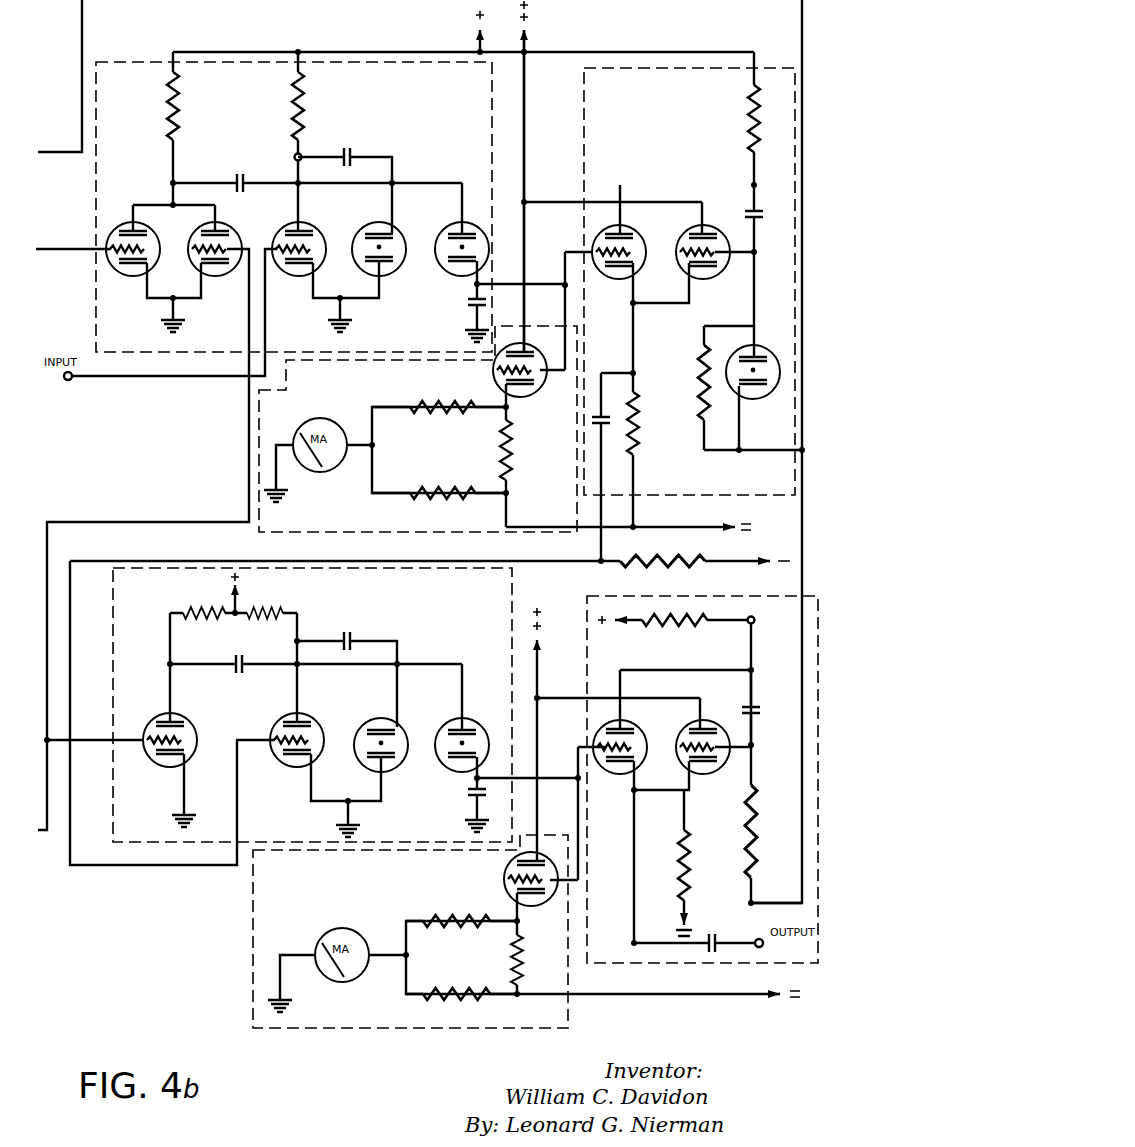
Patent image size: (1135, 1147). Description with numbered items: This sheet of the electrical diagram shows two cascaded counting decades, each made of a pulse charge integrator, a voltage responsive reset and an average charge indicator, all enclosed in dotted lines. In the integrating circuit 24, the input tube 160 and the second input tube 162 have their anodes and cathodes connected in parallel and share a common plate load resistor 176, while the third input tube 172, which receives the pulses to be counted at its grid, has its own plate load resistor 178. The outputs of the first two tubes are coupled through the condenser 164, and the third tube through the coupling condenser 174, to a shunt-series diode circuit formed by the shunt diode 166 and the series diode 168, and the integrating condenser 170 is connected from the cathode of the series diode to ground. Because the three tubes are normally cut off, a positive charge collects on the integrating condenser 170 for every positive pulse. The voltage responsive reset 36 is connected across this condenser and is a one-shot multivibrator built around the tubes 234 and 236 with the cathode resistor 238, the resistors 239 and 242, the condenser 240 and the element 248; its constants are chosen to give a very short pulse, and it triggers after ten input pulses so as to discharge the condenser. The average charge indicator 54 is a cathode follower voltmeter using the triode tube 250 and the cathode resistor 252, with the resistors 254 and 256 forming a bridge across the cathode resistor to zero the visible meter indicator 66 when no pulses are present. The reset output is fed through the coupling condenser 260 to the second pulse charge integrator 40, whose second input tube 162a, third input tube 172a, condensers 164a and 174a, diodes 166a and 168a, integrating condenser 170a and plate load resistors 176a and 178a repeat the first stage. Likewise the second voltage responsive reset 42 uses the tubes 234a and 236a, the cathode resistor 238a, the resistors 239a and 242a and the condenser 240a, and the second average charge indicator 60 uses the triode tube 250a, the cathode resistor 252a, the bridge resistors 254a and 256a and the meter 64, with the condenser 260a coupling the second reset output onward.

The integrating circuit 24 is at (112, 66).
The voltage responsive reset 36 is at (762, 68).
The second pulse charge integrator 40 is at (162, 568).
The second voltage responsive reset 42 is at (587, 612).
The average charge indicator 54 is at (320, 532).
The second average charge indicator 60 is at (308, 1028).
The meter 64 is at (344, 926).
The visible meter indicator 66 is at (326, 420).
The input tube 160 is at (236, 224).
The second input tube 162 is at (112, 214).
The condenser 164 is at (240, 178).
The shunt diode 166 is at (398, 228).
The series diode 168 is at (466, 192).
The integrating condenser 170 is at (468, 303).
The third input tube 172 is at (320, 226).
The coupling condenser 174 is at (350, 152).
The common plate load resistor 176 is at (179, 108).
The plate load resistor 178 is at (304, 100).
The tube 234 is at (636, 236).
The tube 236 is at (716, 220).
The cathode resistor 238 is at (638, 426).
The resistor 239 is at (750, 122).
The condenser 240 is at (764, 212).
The resistor 242 is at (700, 360).
The reset circuit element 248 is at (762, 340).
The triode tube 250 is at (514, 396).
The cathode resistor 252 is at (500, 448).
The resistor 254 is at (449, 409).
The resistor 256 is at (452, 496).
The coupling condenser 260 is at (596, 422).
The second input tube 162a is at (187, 722).
The condenser 164a is at (238, 660).
The shunt diode 166a is at (400, 728).
The series diode 168a is at (440, 762).
The integrating condenser 170a is at (470, 796).
The third input tube 172a is at (316, 724).
The coupling condenser 174a is at (350, 638).
The plate load resistor 176a is at (198, 612).
The plate load resistor 178a is at (280, 604).
The tube 234a is at (638, 730).
The tube 236a is at (714, 720).
The cathode resistor 238a is at (690, 888).
The resistor 239a is at (680, 626).
The condenser 240a is at (760, 710).
The resistor 242a is at (748, 806).
The triode tube 250a is at (510, 870).
The cathode resistor 252a is at (512, 940).
The resistor 254a is at (455, 916).
The resistor 256a is at (454, 990).
The condenser 260a is at (708, 932).